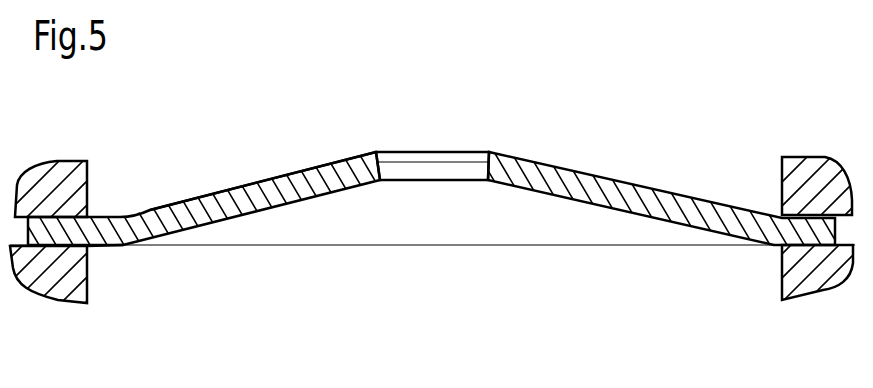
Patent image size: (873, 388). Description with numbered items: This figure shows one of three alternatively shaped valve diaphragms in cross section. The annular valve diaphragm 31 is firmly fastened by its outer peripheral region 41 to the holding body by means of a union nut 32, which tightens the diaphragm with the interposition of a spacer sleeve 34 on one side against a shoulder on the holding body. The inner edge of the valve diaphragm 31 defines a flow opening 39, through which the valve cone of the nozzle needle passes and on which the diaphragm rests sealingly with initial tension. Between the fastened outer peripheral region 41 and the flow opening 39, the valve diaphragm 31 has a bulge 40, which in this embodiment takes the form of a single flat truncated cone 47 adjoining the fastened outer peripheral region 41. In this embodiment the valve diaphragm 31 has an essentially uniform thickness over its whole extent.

The valve diaphragm 31 is at (673, 198).
The union nut 32 is at (61, 282).
The spacer sleeve 34 is at (72, 160).
The flow opening 39 is at (381, 172).
The bulge 40 is at (248, 195).
The outer peripheral region 41 is at (90, 248).
The truncated cone 47 is at (325, 165).